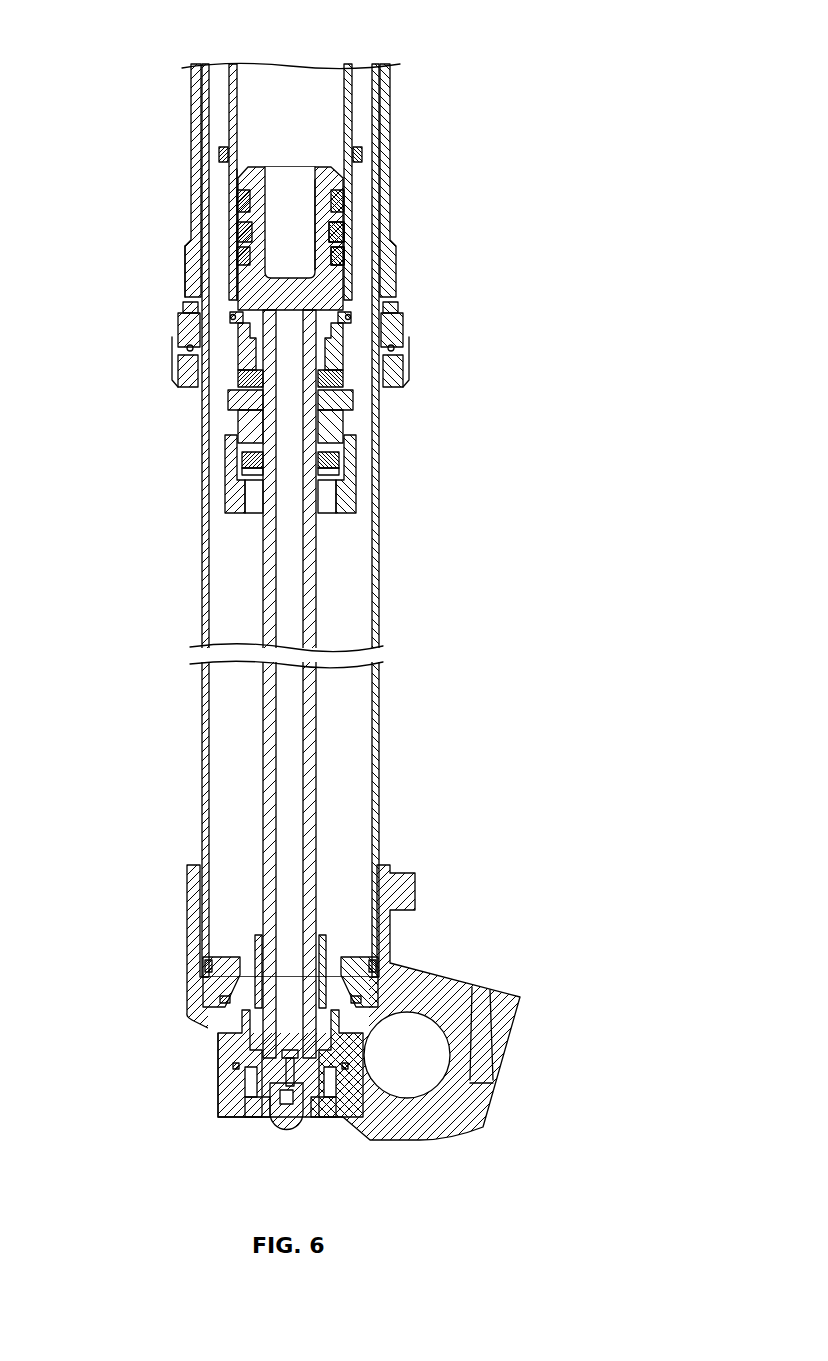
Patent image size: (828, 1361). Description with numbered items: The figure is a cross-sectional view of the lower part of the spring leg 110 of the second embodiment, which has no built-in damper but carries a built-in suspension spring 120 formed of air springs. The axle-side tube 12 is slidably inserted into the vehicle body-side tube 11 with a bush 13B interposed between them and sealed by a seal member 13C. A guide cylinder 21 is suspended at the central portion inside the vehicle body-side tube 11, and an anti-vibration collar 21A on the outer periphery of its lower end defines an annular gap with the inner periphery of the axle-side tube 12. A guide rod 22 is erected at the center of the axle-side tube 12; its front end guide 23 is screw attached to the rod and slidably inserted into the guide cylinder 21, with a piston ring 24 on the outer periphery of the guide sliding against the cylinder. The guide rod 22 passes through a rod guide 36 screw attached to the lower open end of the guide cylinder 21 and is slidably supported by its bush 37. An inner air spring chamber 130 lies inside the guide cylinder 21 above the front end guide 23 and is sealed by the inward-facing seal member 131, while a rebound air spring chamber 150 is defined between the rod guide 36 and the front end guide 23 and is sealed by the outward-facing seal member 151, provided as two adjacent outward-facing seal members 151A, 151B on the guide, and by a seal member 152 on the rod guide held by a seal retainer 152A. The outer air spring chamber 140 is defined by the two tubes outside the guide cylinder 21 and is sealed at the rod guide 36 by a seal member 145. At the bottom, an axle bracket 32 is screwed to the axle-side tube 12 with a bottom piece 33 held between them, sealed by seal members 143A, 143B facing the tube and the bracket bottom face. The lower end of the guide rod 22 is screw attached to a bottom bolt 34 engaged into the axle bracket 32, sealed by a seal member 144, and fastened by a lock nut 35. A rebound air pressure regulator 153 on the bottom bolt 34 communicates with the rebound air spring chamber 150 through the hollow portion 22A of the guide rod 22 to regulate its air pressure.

The spring leg 110 is at (150, 55).
The vehicle body-side tube 11 is at (192, 143).
The axle-side tube 12 is at (203, 742).
The bush 13B is at (198, 267).
The seal member 13C is at (182, 336).
The guide cylinder 21 is at (228, 95).
The anti-vibration collar 21A is at (222, 190).
The guide rod 22 is at (262, 712).
The hollow portion 22A is at (290, 722).
The front end guide 23 is at (356, 168).
The piston ring 24 is at (398, 300).
The suspension spring 120 is at (333, 99).
The inner air spring chamber 130 is at (330, 120).
The seal member 131 is at (350, 205).
The seal member 151 is at (343, 225).
The outward-facing seal member 151A is at (343, 240).
The outward-facing seal member 151B is at (343, 260).
The rebound air spring chamber 150 is at (245, 358).
The seal member 152 is at (342, 410).
The seal retainer 152A is at (325, 358).
The bush 37 is at (330, 440).
The rod guide 36 is at (342, 500).
The seal member 145 is at (223, 467).
The outer air spring chamber 140 is at (228, 780).
The lock nut 35 is at (256, 943).
The bottom piece 33 is at (208, 990).
The seal member 143A is at (208, 968).
The seal member 143B is at (223, 1000).
The axle bracket 32 is at (218, 1032).
The seal member 144 is at (245, 1070).
The bottom bolt 34 is at (228, 1087).
The rebound air pressure regulator 153 is at (270, 1108).